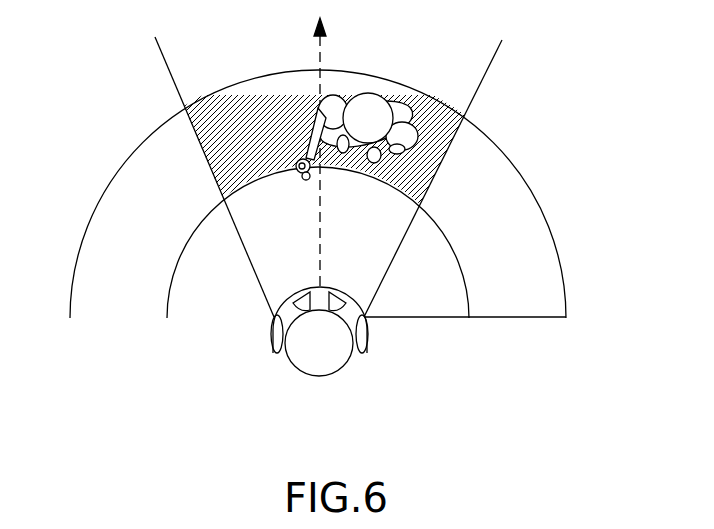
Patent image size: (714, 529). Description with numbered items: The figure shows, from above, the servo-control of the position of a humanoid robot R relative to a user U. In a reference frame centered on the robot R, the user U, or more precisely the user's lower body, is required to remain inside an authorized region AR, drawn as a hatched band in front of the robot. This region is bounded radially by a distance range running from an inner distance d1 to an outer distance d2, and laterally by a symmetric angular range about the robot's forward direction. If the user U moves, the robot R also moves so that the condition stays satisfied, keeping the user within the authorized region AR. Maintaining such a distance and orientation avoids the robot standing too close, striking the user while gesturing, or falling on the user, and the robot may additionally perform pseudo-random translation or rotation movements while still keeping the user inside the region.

The authorized region AR is at (210, 121).
The user U is at (372, 121).
The robot R is at (293, 363).
The lower distance bound d1 is at (167, 317).
The upper distance bound d2 is at (70, 317).